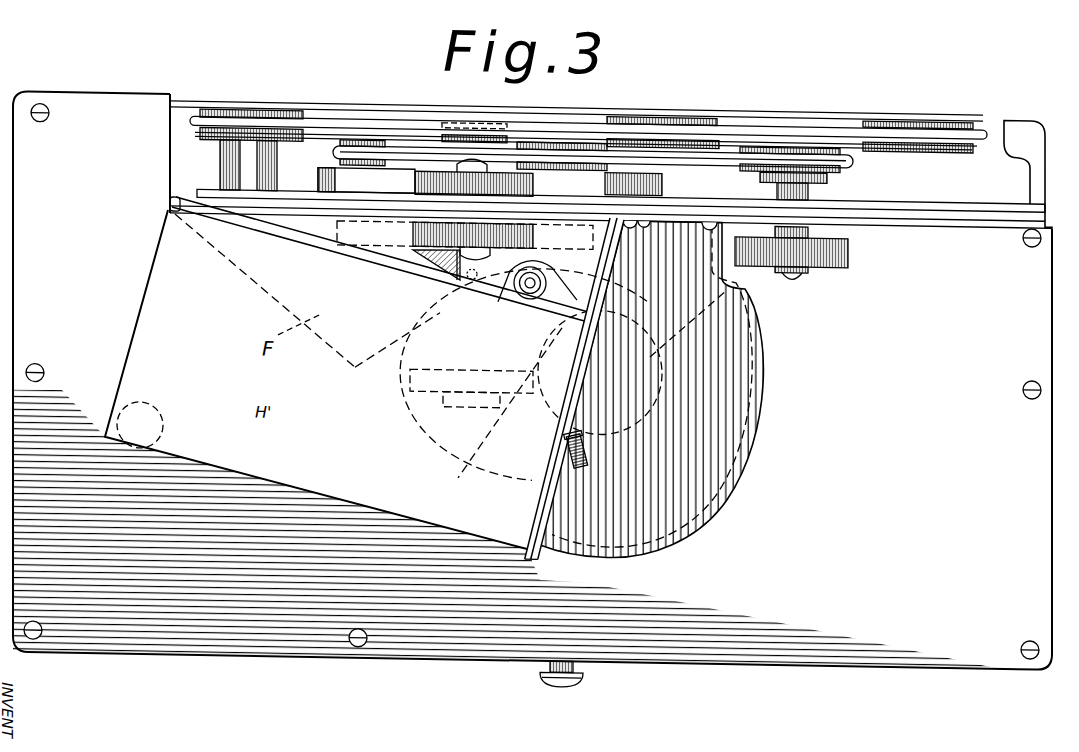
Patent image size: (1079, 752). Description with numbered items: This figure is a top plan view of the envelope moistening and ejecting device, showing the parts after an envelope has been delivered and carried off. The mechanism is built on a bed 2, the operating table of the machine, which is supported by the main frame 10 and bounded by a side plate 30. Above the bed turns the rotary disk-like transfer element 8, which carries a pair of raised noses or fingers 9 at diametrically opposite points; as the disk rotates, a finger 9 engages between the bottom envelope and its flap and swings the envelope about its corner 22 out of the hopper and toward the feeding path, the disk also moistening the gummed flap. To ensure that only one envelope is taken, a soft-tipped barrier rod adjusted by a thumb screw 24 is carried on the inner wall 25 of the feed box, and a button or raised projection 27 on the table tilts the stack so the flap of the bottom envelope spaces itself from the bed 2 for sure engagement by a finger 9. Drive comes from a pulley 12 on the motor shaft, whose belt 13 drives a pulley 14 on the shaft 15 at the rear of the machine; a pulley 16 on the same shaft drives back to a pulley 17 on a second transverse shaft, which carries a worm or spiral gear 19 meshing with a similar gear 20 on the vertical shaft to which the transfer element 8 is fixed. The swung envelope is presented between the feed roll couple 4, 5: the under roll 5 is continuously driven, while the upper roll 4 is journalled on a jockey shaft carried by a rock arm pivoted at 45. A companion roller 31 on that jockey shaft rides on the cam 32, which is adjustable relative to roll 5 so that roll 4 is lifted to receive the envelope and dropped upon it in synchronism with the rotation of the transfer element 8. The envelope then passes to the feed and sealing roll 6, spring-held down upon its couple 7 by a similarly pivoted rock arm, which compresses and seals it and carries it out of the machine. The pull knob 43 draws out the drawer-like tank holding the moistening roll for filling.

The bed 2 is at (532, 380).
The upper feed roll 4 is at (530, 196).
The under feed roll 5 is at (337, 222).
The feed and sealing roll 6 is at (863, 226).
The sealing roll couple 7 is at (593, 363).
The rotary disk-like transfer element 8 is at (742, 503).
The raised noses or fingers 9 is at (628, 240).
The main frame 10 is at (1010, 104).
The pulley 12 is at (274, 104).
The belt 13 is at (530, 121).
The pulley 14 is at (795, 110).
The shaft 15 is at (826, 174).
The pulley 16 is at (682, 188).
The pulley 17 is at (380, 131).
The worm or spiral gear 19 is at (412, 379).
The spiral gear 20 is at (620, 452).
The corner 22 is at (168, 205).
The thumb screw 24 is at (528, 286).
The inner wall 25 is at (257, 225).
The button or raised projection 27 is at (163, 425).
The side plate 30 is at (943, 200).
The companion roller 31 is at (462, 178).
The cam 32 is at (366, 182).
The pull knob 43 is at (576, 678).
The pivot 45 is at (607, 164).